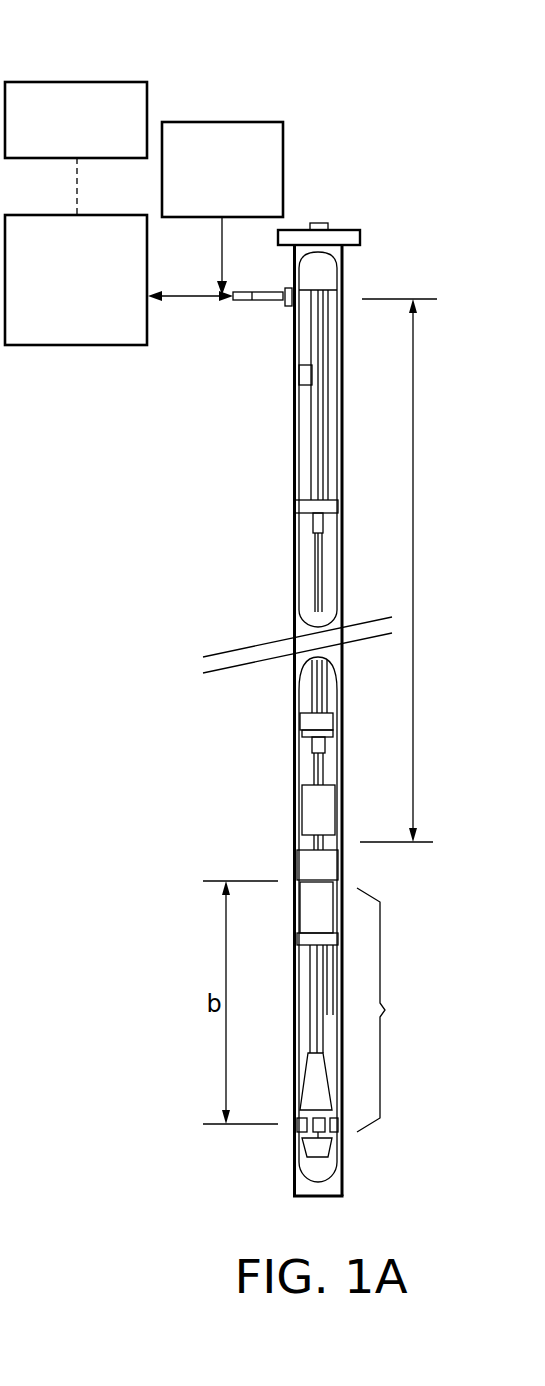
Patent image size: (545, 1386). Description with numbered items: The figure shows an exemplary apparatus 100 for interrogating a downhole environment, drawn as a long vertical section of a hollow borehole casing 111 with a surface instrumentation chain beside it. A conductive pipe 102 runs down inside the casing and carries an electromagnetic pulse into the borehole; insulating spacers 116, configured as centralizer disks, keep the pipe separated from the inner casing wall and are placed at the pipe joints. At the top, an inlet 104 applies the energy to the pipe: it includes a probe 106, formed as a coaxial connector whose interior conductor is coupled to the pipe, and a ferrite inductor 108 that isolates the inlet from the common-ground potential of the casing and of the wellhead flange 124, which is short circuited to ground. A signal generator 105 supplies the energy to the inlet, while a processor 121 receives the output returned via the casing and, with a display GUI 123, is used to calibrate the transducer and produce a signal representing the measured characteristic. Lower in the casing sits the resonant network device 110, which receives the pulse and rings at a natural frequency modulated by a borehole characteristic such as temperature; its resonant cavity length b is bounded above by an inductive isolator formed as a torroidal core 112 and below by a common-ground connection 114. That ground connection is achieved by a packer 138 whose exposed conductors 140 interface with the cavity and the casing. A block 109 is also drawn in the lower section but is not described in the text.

The apparatus 100 is at (50, 1160).
The conductive pipe 102 is at (300, 368).
The inlet 104 is at (272, 313).
The signal generator 105 is at (256, 122).
The probe 106 is at (245, 290).
The ferrite inductor 108 is at (231, 298).
The transducer block 109 is at (335, 803).
The resonant network device 110 is at (364, 919).
The hollow borehole casing 111 is at (350, 265).
The torroidal core 112 is at (317, 867).
The connection 114 is at (293, 1127).
The spacers 116 is at (292, 505).
The processor 121 is at (47, 346).
The graphical user interface 123 is at (48, 82).
The wellhead flange 124 is at (342, 228).
The packer 138 is at (345, 1138).
The exposed conductors 140 is at (325, 1153).